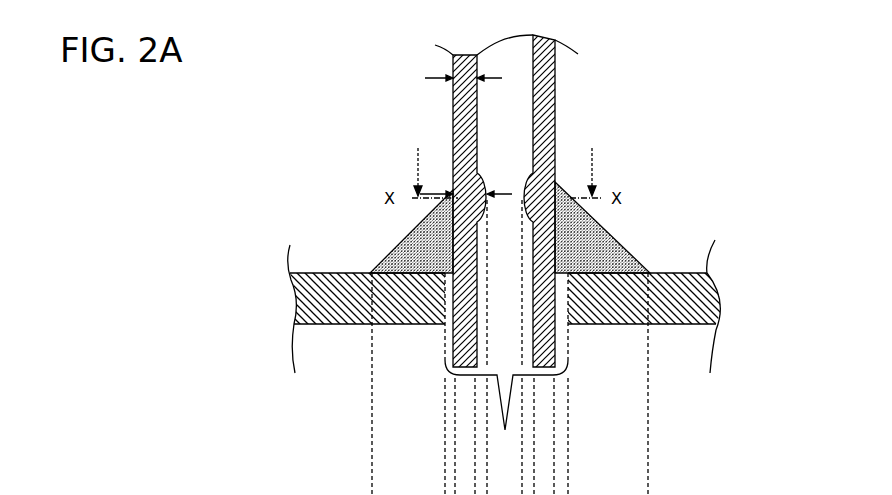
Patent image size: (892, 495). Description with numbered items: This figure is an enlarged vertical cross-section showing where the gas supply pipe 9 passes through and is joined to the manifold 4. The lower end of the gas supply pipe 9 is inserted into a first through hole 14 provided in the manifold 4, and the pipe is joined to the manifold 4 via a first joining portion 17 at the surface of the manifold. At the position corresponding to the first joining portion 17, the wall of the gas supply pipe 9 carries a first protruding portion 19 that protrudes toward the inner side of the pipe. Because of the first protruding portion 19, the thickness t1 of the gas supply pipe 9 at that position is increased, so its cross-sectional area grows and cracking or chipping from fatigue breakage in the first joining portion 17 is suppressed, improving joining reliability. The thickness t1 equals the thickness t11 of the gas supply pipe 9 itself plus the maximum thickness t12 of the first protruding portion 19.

The manifold 4 is at (673, 325).
The gas supply pipe 9 is at (556, 90).
The first through hole 14 is at (505, 430).
The first joining portion 17 is at (590, 248).
The first protruding portion 19 is at (556, 158).
The thickness of the gas supply pipe at the first protruding portion t1 is at (363, 115).
The thickness of the gas supply pipe itself t11 is at (455, 72).
The maximum thickness of the first protruding portion t12 is at (474, 183).